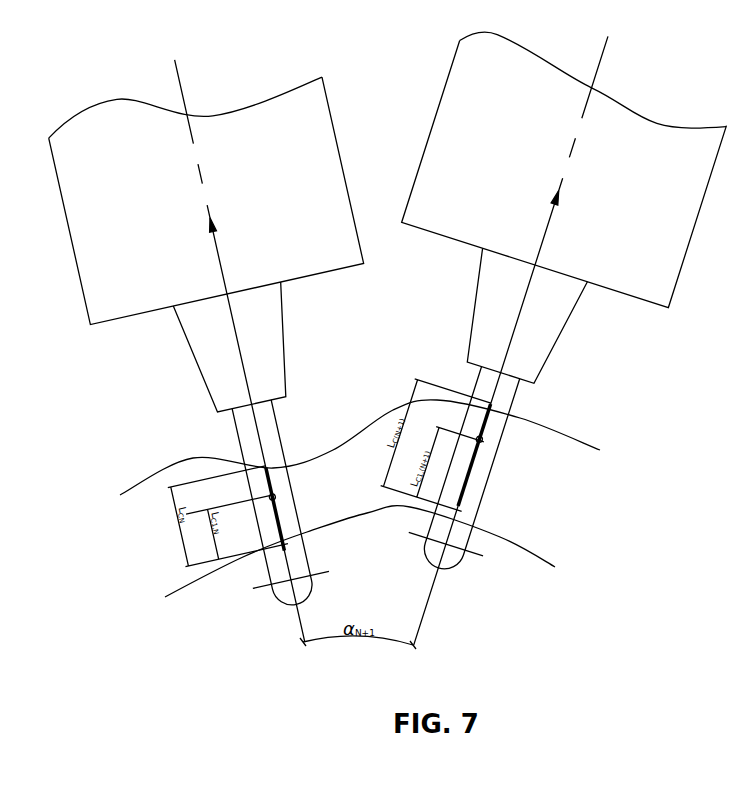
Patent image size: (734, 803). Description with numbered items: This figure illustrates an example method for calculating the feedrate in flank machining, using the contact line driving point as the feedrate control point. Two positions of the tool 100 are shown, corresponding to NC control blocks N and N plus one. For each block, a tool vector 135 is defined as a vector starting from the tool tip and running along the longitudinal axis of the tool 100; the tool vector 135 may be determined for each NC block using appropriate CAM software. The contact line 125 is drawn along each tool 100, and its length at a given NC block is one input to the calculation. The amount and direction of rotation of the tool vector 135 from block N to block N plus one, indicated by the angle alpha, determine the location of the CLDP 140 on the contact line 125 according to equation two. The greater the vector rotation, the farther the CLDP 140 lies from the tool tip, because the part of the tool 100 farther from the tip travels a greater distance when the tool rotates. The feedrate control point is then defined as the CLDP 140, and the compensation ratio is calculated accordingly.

The tool 100 is at (271, 442).
The contact line 125 is at (277, 520).
The tool vector 135 is at (223, 278).
The contact line driving point (CLDP) 140 is at (273, 497).